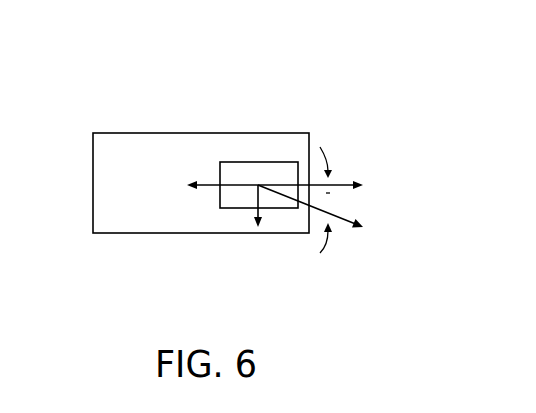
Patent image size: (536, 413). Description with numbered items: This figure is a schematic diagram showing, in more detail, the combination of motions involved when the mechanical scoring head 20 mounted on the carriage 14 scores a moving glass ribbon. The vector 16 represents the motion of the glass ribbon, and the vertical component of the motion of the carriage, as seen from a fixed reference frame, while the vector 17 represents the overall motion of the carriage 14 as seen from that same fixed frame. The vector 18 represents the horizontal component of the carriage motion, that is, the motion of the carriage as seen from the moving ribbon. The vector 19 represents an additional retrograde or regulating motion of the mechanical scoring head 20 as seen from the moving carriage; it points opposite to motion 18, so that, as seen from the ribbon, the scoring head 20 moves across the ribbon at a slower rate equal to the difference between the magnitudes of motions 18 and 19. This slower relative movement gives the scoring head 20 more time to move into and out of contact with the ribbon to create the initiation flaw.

The carriage 14 is at (126, 153).
The mechanical scoring head 20 is at (232, 197).
The vector representing retrograde motion of mechanical scoring head 19 is at (205, 183).
The vector representing horizontal component of motion of carriage 18 is at (343, 183).
The vector representing motion of ribbon and vertical component of motion of carriag 16 is at (257, 197).
The vector representing motion of carriage 17 is at (343, 222).